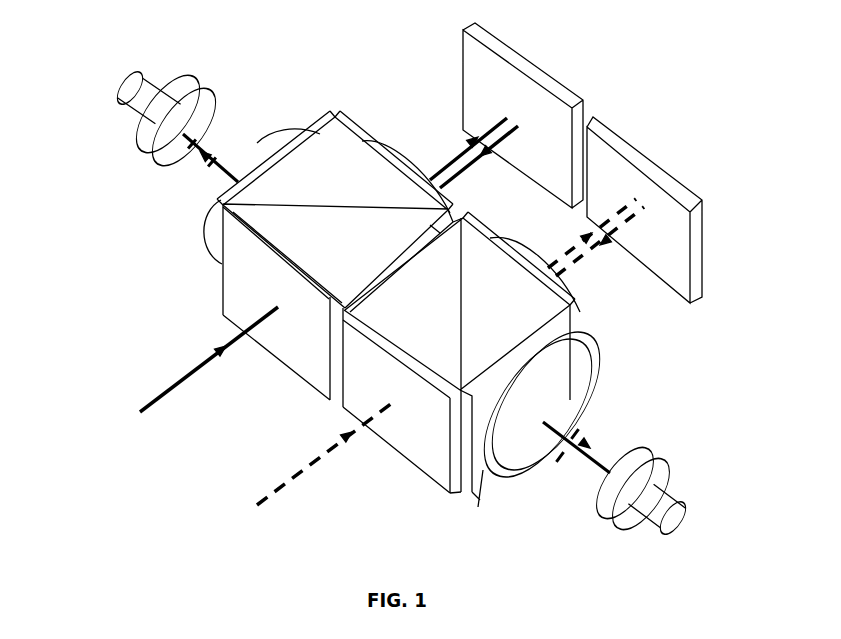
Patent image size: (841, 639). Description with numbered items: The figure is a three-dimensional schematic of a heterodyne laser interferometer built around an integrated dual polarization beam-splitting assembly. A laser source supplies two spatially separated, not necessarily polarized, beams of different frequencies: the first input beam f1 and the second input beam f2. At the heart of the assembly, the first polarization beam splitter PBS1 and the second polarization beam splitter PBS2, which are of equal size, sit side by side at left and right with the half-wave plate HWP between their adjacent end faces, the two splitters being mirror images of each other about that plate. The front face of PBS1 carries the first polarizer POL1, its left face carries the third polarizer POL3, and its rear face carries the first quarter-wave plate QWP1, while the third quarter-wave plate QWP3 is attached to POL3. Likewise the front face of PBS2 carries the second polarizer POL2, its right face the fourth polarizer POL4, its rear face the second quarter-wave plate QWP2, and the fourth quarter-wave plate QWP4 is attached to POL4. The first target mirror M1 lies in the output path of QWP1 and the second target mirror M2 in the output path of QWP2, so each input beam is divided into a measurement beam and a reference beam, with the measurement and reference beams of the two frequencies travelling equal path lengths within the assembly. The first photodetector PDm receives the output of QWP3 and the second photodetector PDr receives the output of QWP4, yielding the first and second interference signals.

The first polarization beam splitter PBS1 is at (227, 210).
The second polarization beam splitter PBS2 is at (468, 342).
The first polarizer POL1 is at (230, 292).
The second polarizer POL2 is at (423, 443).
The third polarizer POL3 is at (318, 135).
The fourth polarizer POL4 is at (490, 482).
The first quarter-wave plate QWP1 is at (390, 144).
The second quarter-wave plate QWP2 is at (565, 290).
The third quarter-wave plate QWP3 is at (212, 230).
The fourth quarter-wave plate QWP4 is at (562, 393).
The half-wave plate HWP is at (449, 220).
The first target mirror M1 is at (515, 75).
The second target mirror M2 is at (627, 155).
The first photodetector PDm is at (113, 97).
The second photodetector PDr is at (607, 515).
The first input beam f1 is at (196, 359).
The second input beam f2 is at (310, 454).